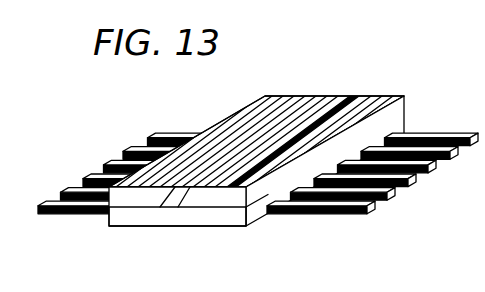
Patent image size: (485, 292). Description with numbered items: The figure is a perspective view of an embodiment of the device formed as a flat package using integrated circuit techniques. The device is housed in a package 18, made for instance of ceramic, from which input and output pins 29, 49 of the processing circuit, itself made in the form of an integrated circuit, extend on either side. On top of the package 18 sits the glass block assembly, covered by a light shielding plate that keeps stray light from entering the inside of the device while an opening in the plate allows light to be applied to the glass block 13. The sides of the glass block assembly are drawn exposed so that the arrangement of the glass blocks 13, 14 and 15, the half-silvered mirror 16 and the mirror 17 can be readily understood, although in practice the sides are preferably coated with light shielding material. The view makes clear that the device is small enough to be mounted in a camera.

The glass block 13 is at (173, 201).
The glass block 14 is at (219, 198).
The glass block 15 is at (131, 198).
The half-silvered mirror 16 is at (190, 187).
The mirror 17 is at (160, 207).
The package 18 is at (150, 222).
The input and output pins 29 is at (155, 125).
The input and output pins 49 is at (370, 217).